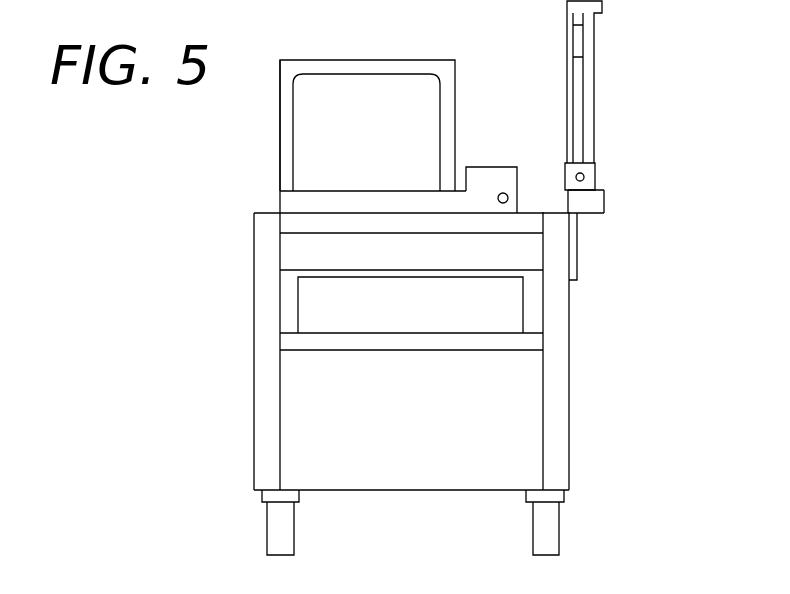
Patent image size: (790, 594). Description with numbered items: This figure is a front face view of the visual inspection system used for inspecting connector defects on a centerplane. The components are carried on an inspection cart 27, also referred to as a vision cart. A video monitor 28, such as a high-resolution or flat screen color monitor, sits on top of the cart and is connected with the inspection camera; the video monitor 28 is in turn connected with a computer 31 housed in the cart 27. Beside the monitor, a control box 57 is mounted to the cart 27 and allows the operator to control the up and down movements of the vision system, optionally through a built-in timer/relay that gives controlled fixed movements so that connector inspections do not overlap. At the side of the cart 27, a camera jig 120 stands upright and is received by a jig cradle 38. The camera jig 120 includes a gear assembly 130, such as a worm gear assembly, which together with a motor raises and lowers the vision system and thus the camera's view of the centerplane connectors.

The inspection cart 27 is at (570, 430).
The video monitor 28 is at (365, 60).
The computer 31 is at (493, 298).
The jig cradle 38 is at (577, 247).
The control box 57 is at (488, 167).
The camera jig 120 is at (594, 43).
The gear assembly 130 is at (597, 173).